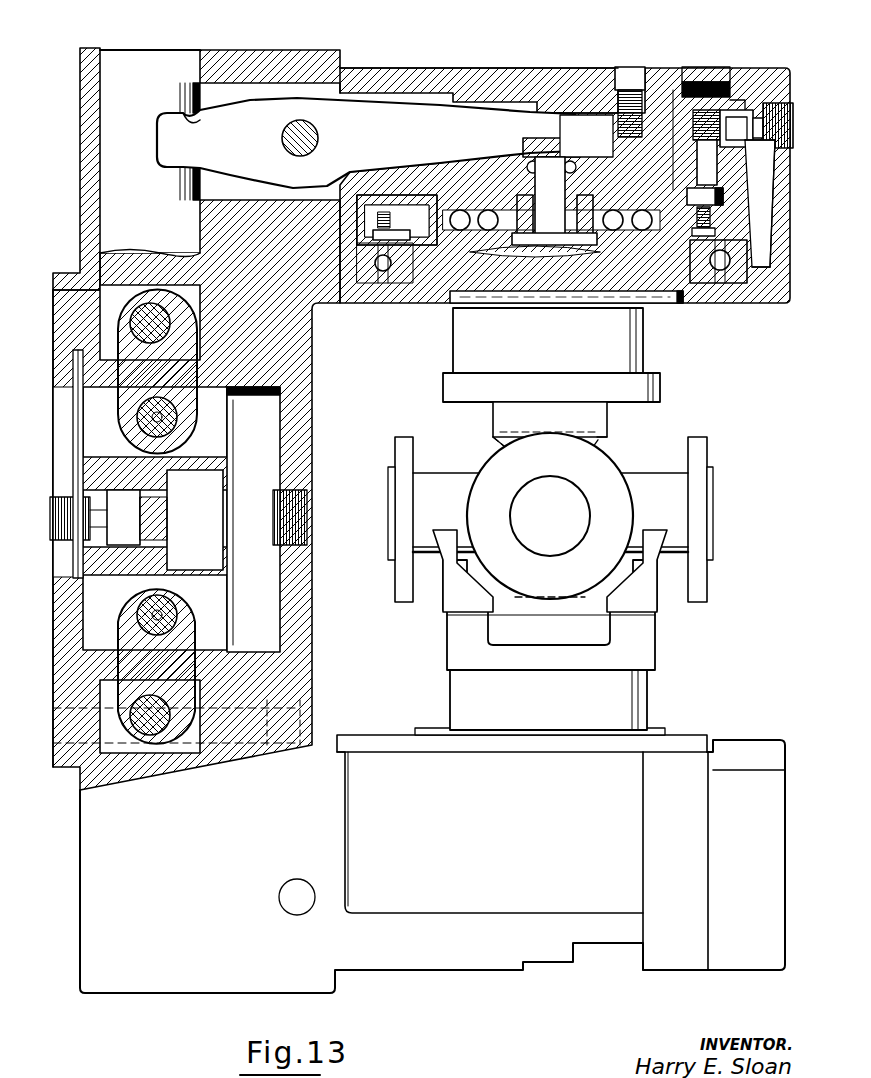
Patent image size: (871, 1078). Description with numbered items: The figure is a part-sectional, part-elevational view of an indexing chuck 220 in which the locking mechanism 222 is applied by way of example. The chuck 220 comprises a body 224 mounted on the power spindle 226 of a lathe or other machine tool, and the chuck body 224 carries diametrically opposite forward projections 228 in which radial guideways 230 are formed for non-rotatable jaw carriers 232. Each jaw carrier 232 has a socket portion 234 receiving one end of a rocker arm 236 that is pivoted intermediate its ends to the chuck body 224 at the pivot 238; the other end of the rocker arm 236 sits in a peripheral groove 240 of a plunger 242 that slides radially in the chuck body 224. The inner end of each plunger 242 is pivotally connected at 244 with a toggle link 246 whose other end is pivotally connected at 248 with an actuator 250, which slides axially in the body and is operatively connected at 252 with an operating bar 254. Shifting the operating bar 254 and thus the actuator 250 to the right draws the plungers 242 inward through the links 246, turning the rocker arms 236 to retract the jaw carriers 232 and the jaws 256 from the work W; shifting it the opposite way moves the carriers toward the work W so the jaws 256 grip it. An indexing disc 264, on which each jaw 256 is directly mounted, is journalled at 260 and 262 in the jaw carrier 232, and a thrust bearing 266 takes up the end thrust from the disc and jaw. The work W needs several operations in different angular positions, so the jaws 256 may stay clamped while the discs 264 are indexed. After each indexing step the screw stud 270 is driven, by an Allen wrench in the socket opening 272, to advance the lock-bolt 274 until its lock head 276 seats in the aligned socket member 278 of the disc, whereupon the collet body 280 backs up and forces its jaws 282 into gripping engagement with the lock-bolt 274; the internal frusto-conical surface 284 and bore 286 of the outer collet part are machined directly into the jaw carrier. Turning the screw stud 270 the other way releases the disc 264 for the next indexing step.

The indexing chuck 220 is at (640, 45).
The locking mechanism 222 is at (742, 165).
The chuck body 224 is at (276, 58).
The power spindle 226 is at (62, 396).
The forward projections 228 is at (536, 855).
The radial guideways 230 is at (352, 88).
The jaw carriers 232 is at (452, 66).
The socket portion 234 is at (574, 128).
The rocker arm 236 is at (408, 142).
The pivot 238 is at (313, 133).
The peripheral groove 240 is at (196, 122).
The plunger 242 is at (146, 174).
The pivotal connection 244 is at (150, 304).
The toggle link 246 is at (184, 376).
The pivotal connection 248 is at (170, 427).
The actuator 250 is at (228, 577).
The operative connection 252 is at (128, 519).
The operating bar 254 is at (68, 482).
The jaws 256 is at (652, 356).
The journal 260 is at (588, 178).
The journal 262 is at (383, 292).
The indexing disc 264 is at (676, 292).
The thrust bearing 266 is at (483, 208).
The screw stud 270 is at (714, 108).
The socket opening 272 is at (708, 72).
The lock-bolt 274 is at (740, 178).
The lock head 276 is at (740, 202).
The socket member 278 is at (738, 218).
The collet body 280 is at (734, 88).
The collet jaws 282 is at (758, 190).
The internal frusto-conical surface 284 is at (747, 141).
The bore 286 is at (748, 92).
The work W is at (632, 470).